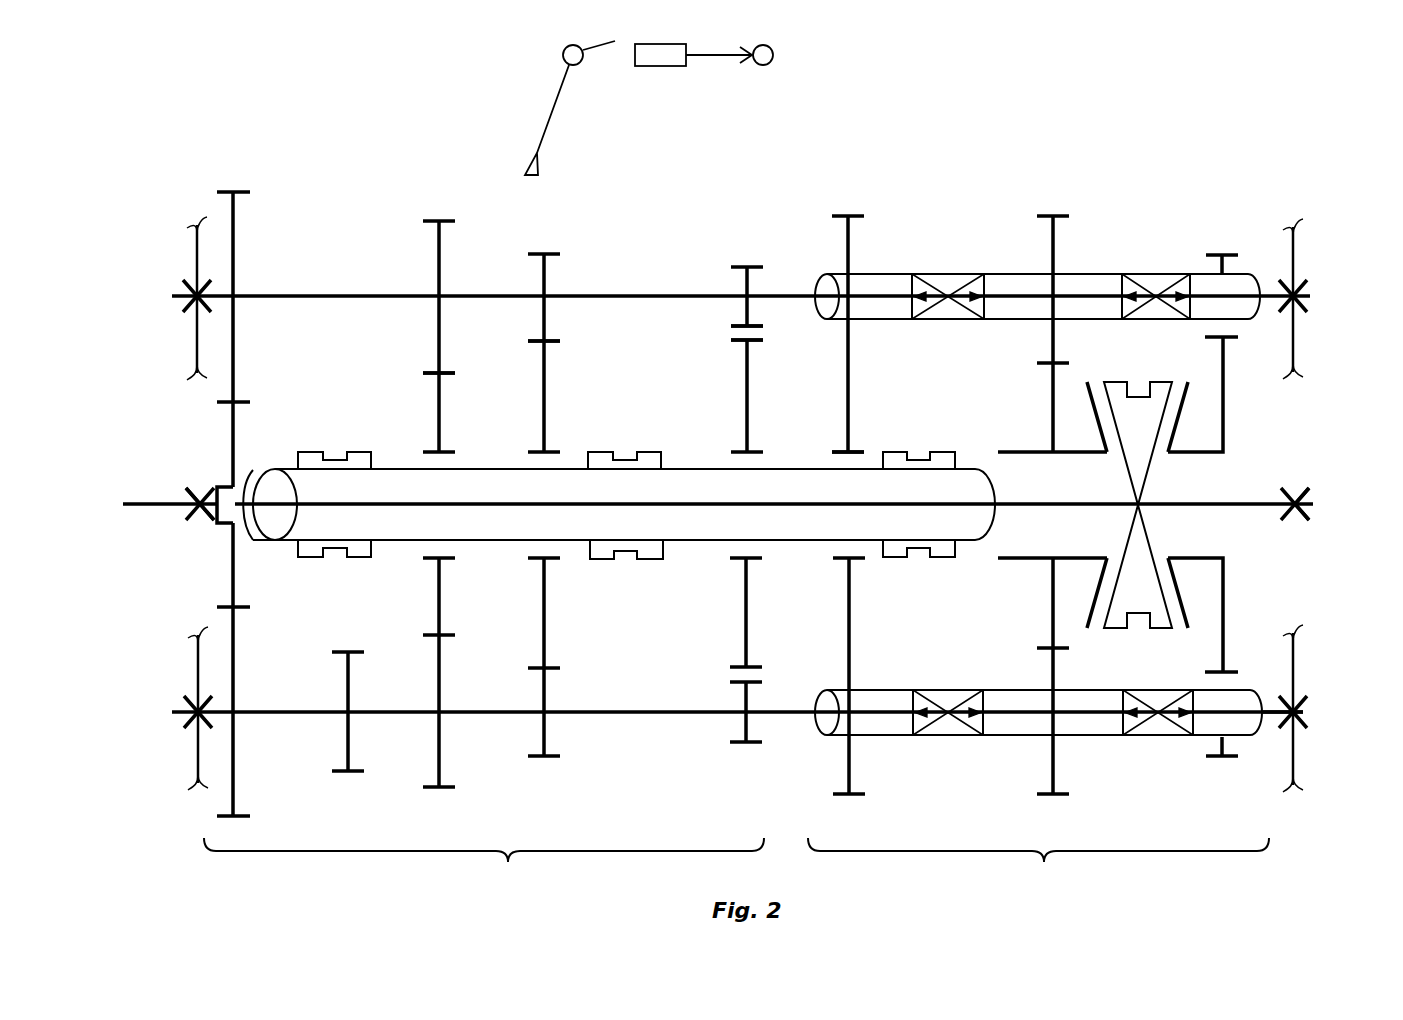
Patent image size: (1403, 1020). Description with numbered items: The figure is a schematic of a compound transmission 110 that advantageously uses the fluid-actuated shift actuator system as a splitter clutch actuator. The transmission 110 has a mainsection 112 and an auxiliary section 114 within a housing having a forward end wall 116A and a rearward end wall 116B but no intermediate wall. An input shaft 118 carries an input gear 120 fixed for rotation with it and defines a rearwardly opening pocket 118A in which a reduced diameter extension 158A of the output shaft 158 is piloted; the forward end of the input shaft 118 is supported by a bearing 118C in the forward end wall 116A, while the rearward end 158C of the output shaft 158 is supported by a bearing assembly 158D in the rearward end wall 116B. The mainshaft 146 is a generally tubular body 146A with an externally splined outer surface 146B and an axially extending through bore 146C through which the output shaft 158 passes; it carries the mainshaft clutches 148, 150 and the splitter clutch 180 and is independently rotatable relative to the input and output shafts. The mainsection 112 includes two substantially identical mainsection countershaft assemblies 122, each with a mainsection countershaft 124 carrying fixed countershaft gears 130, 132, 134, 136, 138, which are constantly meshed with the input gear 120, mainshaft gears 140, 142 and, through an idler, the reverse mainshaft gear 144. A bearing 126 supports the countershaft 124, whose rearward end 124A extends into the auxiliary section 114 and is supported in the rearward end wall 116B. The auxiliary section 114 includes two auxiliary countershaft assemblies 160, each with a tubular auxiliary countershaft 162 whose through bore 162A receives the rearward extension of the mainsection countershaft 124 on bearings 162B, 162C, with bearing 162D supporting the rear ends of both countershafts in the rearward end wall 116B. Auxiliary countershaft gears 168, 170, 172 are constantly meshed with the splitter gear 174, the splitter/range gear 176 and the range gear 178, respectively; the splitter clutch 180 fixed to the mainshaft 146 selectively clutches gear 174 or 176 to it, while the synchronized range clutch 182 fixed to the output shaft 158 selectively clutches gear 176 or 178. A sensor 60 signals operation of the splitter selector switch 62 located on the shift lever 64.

The sensor 60 is at (660, 75).
The splitter selector switch 62 is at (590, 57).
The shift lever 64 is at (550, 112).
The compound transmission 110 is at (993, 188).
The mainsection 112 is at (484, 865).
The auxiliary section 114 is at (1038, 865).
The forward end wall 116A is at (197, 357).
The rearward end wall 116B is at (1293, 265).
The input shaft 118 is at (167, 508).
The pocket 118A is at (227, 514).
The bearing 118C is at (210, 530).
The input gear 120 is at (233, 442).
The mainsection countershaft assembly 122 is at (636, 248).
The mainsection countershaft 124 is at (489, 714).
The rearward end 124A is at (1275, 715).
The bearing 126 is at (188, 716).
The countershaft gear 130 is at (233, 248).
The countershaft gear 132 is at (374, 711).
The countershaft gear 134 is at (439, 278).
The countershaft gear 136 is at (544, 287).
The countershaft gear 138 is at (747, 285).
The mainshaft gear 140 is at (440, 403).
The mainshaft gear 142 is at (544, 445).
The reverse mainshaft gear 144 is at (747, 430).
The mainshaft 146 is at (470, 463).
The tubular body 146A is at (417, 522).
The externally splined outer surface 146B is at (505, 468).
The through bore 146C is at (695, 470).
The mainshaft clutch 148 is at (333, 456).
The mainshaft clutch 150 is at (627, 455).
The output shaft 158 is at (1262, 504).
The reduced diameter extension 158A is at (247, 500).
The rearward end 158C is at (1305, 512).
The bearing assembly 158D is at (1307, 494).
The auxiliary countershaft assembly 160 is at (1148, 213).
The auxiliary countershaft 162 is at (1016, 273).
The through bore 162A is at (1005, 690).
The bearing 162B is at (945, 286).
The bearing 162C is at (1152, 288).
The bearing 162D is at (1305, 710).
The auxiliary countershaft gear 168 is at (848, 262).
The auxiliary countershaft gear 170 is at (1053, 252).
The auxiliary countershaft gear 172 is at (1222, 268).
The splitter gear 174 is at (848, 432).
The splitter/range gear 176 is at (1053, 430).
The range gear 178 is at (1215, 340).
The splitter clutch 180 is at (920, 456).
The range clutch 182 is at (1138, 560).